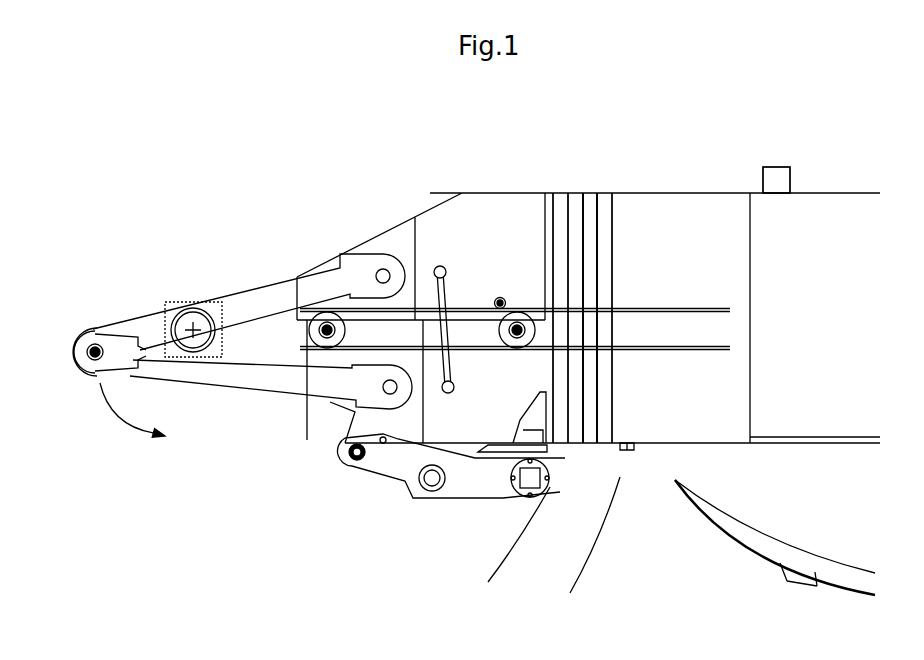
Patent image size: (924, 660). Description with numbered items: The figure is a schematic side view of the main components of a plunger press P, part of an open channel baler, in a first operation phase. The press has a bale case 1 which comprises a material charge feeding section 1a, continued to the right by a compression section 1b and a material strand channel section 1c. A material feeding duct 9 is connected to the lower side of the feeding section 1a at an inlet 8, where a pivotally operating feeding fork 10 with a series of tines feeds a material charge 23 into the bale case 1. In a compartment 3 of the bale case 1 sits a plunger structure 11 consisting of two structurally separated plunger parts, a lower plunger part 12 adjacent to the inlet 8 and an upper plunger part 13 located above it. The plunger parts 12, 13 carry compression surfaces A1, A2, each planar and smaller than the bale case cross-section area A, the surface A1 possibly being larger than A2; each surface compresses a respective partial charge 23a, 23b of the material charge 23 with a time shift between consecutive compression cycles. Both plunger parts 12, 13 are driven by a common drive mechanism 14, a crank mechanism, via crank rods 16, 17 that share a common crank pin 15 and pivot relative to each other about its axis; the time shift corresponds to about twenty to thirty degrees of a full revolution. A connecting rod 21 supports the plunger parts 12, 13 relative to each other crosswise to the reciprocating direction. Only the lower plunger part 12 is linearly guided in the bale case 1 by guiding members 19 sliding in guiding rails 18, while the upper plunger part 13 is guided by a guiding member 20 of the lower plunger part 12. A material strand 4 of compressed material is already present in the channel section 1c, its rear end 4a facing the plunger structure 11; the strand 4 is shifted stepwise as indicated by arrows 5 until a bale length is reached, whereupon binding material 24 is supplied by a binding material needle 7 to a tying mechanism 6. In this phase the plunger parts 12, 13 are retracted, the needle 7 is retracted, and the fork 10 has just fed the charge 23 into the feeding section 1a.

The bale case 1 is at (680, 193).
The material charge feeding section 1a is at (588, 179).
The compression section 1b is at (717, 180).
The material strand channel section 1c is at (838, 179).
The compartment 3 is at (466, 210).
The material strand 4 is at (803, 222).
The rear end of material strand 4a is at (750, 312).
The arrows 5 is at (757, 330).
The tying mechanism 6 is at (777, 178).
The binding material needle 7 is at (723, 527).
The inlet 8 is at (628, 432).
The material feeding duct 9 is at (616, 488).
The feeding fork 10 is at (567, 467).
The plunger structure 11 is at (222, 292).
The lower plunger part 12 is at (448, 427).
The upper plunger part 13 is at (424, 237).
The drive mechanism 14 is at (115, 308).
The crank pin 15 is at (95, 352).
The crank rod 16 is at (253, 305).
The crank rod 17 is at (280, 375).
The guiding rails 18 is at (705, 309).
The guiding members 19 is at (332, 330).
The guiding member 20 is at (496, 298).
The connecting rod 21 is at (445, 332).
The material charge 23 is at (639, 281).
The partial charge 23a is at (595, 272).
The partial charge 23b is at (595, 398).
The binding material 24 is at (674, 497).
The bale case cross-section area A is at (743, 431).
The compression surface A1 is at (552, 362).
The compression surface A2 is at (545, 223).
The plunger press P is at (652, 160).